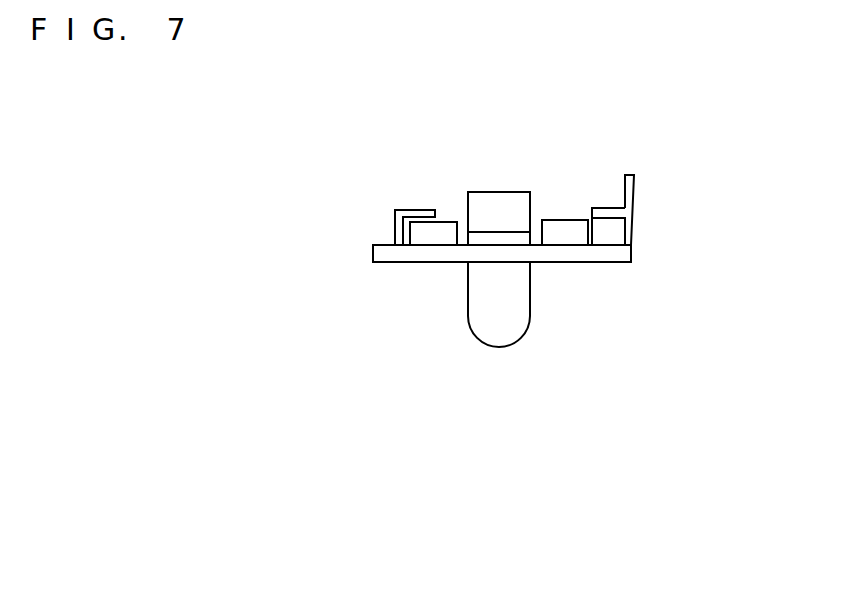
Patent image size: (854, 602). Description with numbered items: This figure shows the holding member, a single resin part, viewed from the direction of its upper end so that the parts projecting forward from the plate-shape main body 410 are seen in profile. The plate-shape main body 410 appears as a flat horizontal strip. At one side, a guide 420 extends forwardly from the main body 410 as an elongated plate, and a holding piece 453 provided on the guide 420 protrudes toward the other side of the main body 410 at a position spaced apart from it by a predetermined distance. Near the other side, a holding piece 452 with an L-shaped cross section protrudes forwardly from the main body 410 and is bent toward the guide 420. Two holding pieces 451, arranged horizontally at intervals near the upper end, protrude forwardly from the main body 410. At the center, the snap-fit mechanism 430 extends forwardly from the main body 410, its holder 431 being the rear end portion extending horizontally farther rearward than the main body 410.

The plate-shape main body 410 is at (382, 253).
The guide 420 is at (702, 288).
The snap-fit mechanism 430 is at (490, 184).
The holder 431 is at (460, 370).
The holding piece 451 is at (415, 305).
The holding piece 452 is at (420, 210).
The holding piece 453 is at (665, 147).